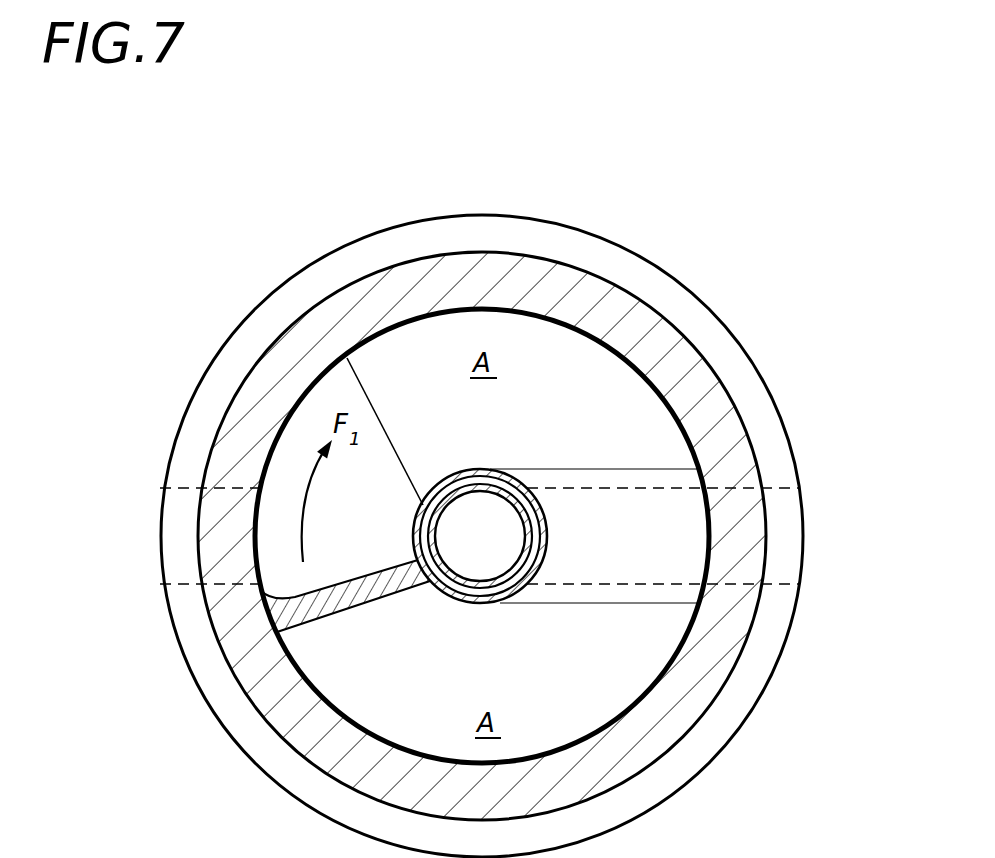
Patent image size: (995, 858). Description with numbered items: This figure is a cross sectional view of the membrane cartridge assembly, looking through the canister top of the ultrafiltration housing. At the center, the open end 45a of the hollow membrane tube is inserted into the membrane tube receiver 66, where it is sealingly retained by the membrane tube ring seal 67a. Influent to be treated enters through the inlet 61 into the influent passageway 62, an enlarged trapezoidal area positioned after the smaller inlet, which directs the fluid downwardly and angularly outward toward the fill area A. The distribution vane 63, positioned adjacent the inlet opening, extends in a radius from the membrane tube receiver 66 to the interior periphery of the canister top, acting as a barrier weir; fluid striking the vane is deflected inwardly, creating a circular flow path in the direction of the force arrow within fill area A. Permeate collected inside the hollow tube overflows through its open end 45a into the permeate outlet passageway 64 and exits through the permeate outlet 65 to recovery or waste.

The inlet 61 is at (180, 543).
The permeate outlet 65 is at (787, 528).
The influent passageway 62 is at (386, 538).
The distribution vane 63 is at (338, 605).
The permeate outlet passageway 64 is at (650, 548).
The open end 45a is at (460, 473).
The membrane tube receiver 66 is at (458, 595).
The membrane tube ring seal 67a is at (537, 513).